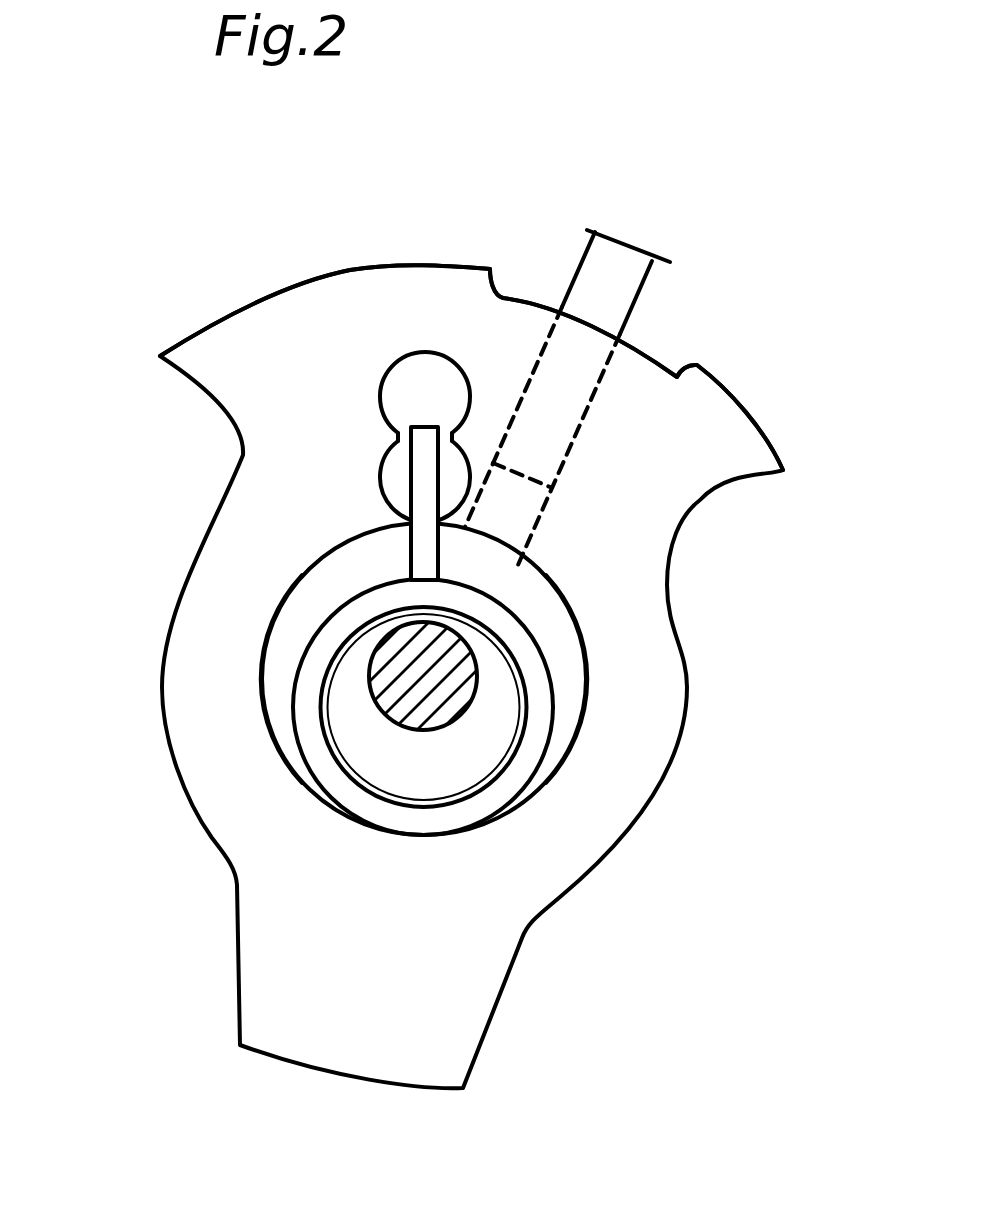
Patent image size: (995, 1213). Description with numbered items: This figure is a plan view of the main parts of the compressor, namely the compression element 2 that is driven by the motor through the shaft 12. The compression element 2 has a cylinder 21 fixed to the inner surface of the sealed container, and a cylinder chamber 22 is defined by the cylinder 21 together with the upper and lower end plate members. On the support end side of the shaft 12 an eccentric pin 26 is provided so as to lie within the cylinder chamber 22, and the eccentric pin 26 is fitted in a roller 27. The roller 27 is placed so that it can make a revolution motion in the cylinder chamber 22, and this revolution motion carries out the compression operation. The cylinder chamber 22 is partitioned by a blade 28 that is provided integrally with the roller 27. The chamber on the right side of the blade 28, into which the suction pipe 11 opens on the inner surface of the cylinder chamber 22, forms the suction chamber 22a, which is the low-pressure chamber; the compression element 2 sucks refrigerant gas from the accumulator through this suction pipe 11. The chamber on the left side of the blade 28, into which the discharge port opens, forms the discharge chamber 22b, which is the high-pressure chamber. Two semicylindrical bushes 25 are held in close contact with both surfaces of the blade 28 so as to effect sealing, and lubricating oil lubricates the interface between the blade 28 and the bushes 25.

The compression element 2 is at (205, 322).
The cylinder 21 is at (400, 300).
The cylinder chamber 22 is at (351, 540).
The suction chamber 22a is at (570, 713).
The discharge chamber 22b is at (274, 697).
The semicylindrical bush 25 is at (390, 450).
The suction pipe 11 is at (597, 290).
The shaft 12 is at (458, 697).
The eccentric pin 26 is at (462, 778).
The roller 27 is at (517, 633).
The blade 28 is at (428, 558).